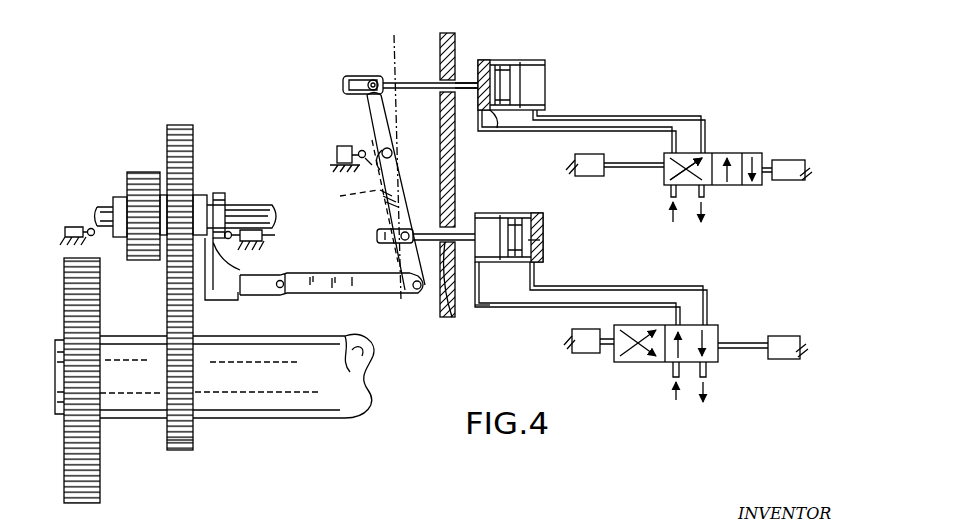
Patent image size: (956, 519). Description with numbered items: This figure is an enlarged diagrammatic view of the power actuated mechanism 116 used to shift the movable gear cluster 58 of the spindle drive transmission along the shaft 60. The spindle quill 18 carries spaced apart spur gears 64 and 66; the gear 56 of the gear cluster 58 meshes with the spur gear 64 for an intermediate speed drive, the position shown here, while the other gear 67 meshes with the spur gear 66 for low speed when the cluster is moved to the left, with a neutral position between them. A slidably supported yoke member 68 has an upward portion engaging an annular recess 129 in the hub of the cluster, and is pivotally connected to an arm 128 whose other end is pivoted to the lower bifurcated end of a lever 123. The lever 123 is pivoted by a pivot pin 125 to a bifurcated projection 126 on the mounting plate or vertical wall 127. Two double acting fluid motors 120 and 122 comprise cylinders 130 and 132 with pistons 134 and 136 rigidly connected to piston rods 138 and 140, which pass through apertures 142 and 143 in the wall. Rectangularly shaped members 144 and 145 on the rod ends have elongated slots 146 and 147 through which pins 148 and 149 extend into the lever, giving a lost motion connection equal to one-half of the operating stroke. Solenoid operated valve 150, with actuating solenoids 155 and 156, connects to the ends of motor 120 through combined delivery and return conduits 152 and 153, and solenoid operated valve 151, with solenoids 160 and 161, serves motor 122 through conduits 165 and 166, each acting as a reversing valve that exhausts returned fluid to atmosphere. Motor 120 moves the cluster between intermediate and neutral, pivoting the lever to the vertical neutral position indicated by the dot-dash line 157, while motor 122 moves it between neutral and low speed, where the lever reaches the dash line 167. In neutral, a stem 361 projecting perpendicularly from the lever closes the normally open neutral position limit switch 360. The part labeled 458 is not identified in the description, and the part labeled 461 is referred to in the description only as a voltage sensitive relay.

The spindle quill 18 is at (316, 413).
The gear 56 is at (193, 135).
The gear cluster 58 is at (164, 150).
The shaft 60 is at (247, 206).
The spur gear 64 is at (183, 450).
The spur gear 66 is at (88, 503).
The gear 67 is at (143, 172).
The yoke member 68 is at (240, 308).
The power actuated mechanism 116 is at (290, 97).
The fluid operated motor 120 is at (532, 60).
The fluid operated motor 122 is at (540, 210).
The lever 123 is at (375, 120).
The pivot pin 125 is at (378, 150).
The bifurcated projection 126 is at (405, 150).
The vertical wall 127 is at (449, 33).
The arm 128 is at (362, 295).
The annular recess 129 is at (222, 192).
The cylinder 130 is at (540, 70).
The cylinder 132 is at (505, 214).
The piston 134 is at (497, 118).
The piston 136 is at (543, 240).
The piston rod 138 is at (412, 84).
The piston rod 140 is at (450, 300).
The aperture 142 is at (462, 80).
The aperture 143 is at (462, 232).
The rectangularly shaped member 144 is at (344, 86).
The rectangularly shaped member 145 is at (376, 234).
The slot 146 is at (354, 77).
The slot 147 is at (384, 238).
The pin 148 is at (373, 78).
The pin 149 is at (394, 243).
The solenoid operated valve 150 is at (712, 146).
The solenoid operated valve 151 is at (715, 320).
The conduit 152 is at (574, 135).
The conduit 153 is at (634, 118).
The actuating solenoid 155 is at (588, 176).
The actuating solenoid 156 is at (785, 160).
The dot-dash line 157 is at (392, 50).
The solenoid 160 is at (580, 352).
The solenoid 161 is at (788, 336).
The conduit 165 is at (654, 292).
The conduit 166 is at (562, 306).
The dash line 167 is at (345, 205).
The neutral position limit switch 360 is at (333, 158).
The stem 361 is at (370, 166).
The bearing bracket 458 is at (73, 226).
The voltage sensitive relay 461 is at (276, 236).